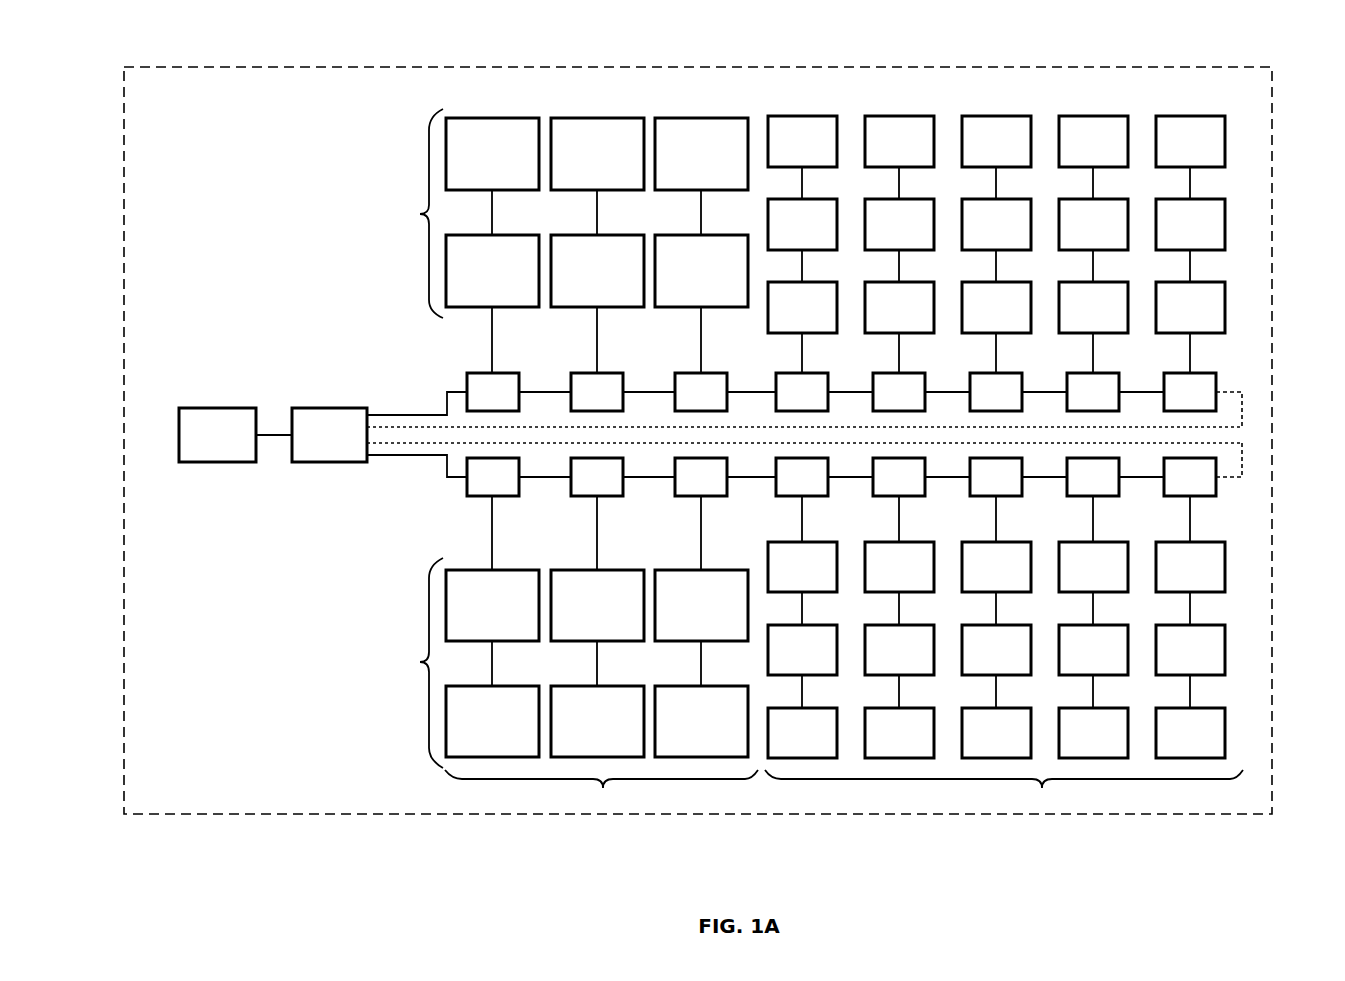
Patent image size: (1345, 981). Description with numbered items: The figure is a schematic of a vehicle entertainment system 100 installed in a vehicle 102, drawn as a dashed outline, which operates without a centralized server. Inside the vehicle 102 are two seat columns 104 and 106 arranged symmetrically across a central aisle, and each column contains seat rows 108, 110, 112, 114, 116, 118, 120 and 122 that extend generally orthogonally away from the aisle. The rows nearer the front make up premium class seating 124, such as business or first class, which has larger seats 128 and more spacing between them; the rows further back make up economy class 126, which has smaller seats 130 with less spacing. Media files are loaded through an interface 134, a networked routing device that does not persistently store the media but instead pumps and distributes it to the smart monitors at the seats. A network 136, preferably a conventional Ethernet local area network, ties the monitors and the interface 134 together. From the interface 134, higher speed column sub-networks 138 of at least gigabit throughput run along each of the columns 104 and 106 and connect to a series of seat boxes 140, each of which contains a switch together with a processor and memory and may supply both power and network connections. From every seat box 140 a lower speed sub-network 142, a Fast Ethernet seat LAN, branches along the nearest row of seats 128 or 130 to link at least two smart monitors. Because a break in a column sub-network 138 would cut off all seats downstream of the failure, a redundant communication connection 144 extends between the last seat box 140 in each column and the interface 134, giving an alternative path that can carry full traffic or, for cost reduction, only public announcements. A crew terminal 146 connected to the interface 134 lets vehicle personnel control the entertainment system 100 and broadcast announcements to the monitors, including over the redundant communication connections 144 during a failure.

The vehicle entertainment system 100 is at (295, 718).
The vehicle 102 is at (283, 67).
The seat column 104 is at (420, 213).
The seat column 106 is at (420, 663).
The seat row 108 is at (502, 109).
The seat row 110 is at (604, 109).
The seat row 112 is at (708, 109).
The seat row 114 is at (802, 109).
The seat row 116 is at (899, 109).
The seat row 118 is at (996, 109).
The seat row 120 is at (1093, 109).
The seat row 122 is at (1190, 109).
The premium class seating 124 is at (603, 788).
The economy class 126 is at (1042, 788).
The seat 128 is at (720, 732).
The seat 130 is at (1209, 743).
The interface 134 is at (335, 408).
The network 136 is at (410, 533).
The column sub-network 138 is at (424, 492).
The seat box 140 is at (1209, 488).
The lower speed sub-network 142 is at (1220, 517).
The redundant communication connection 144 is at (1281, 460).
The crew terminal 146 is at (222, 408).